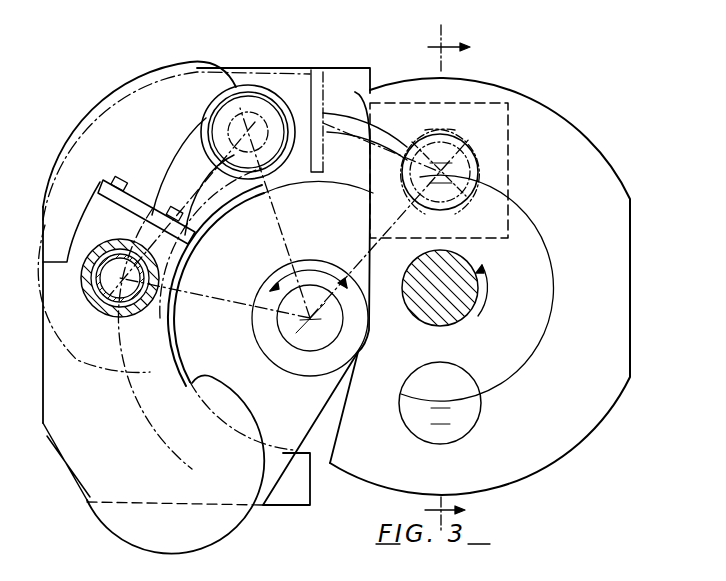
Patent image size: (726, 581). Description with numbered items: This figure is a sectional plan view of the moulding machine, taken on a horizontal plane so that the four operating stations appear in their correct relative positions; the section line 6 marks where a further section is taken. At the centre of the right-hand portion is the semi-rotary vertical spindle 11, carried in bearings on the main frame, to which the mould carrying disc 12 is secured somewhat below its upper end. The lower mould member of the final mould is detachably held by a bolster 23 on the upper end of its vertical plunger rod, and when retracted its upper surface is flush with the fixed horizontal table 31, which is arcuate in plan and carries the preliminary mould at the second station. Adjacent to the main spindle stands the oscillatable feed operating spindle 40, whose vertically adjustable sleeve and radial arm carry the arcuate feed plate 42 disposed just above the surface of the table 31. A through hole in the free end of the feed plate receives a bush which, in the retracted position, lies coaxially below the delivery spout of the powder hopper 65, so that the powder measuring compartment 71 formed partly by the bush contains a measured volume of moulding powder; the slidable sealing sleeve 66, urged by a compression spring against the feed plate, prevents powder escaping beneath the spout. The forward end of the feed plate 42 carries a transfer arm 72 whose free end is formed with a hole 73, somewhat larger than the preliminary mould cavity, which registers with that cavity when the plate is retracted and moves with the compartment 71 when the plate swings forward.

The hole 73 is at (248, 96).
The transfer arm 72 is at (177, 168).
The powder measuring compartment 71 is at (100, 280).
The slidable sealing sleeve 66 is at (100, 303).
The powder hopper 65 is at (128, 304).
The feed operating spindle 40 is at (318, 288).
The arcuate feed plate 42 is at (205, 308).
The fixed horizontal table 31 is at (87, 503).
The bolster 23 is at (480, 103).
The mould carrying disc 12 is at (480, 286).
The semi-rotary vertical spindle 11 is at (462, 313).
The section line 6 is at (449, 277).